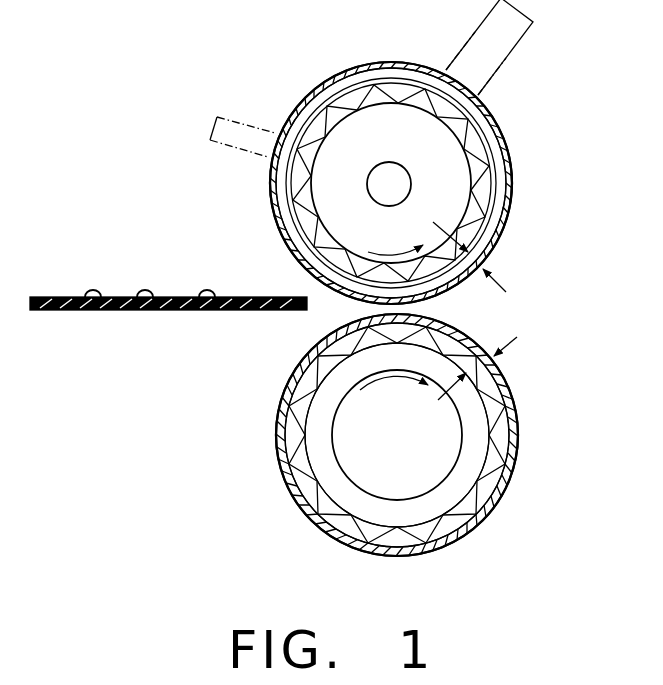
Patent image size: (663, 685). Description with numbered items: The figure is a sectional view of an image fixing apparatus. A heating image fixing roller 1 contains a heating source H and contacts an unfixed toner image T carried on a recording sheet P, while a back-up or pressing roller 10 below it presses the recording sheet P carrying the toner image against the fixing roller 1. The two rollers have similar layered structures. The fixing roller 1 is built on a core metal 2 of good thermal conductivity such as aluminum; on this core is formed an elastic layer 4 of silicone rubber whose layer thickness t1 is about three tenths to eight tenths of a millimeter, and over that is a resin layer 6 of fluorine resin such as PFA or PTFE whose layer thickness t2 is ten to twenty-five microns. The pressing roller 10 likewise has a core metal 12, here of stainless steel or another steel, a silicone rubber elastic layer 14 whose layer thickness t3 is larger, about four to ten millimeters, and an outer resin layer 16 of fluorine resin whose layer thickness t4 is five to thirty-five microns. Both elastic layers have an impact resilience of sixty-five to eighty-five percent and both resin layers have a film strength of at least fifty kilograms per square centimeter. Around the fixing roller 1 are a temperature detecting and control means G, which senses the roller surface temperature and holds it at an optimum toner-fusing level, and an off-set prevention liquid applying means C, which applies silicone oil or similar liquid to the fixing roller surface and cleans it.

The heating image fixing roller 1 is at (504, 118).
The core metal 2 is at (492, 201).
The elastic layer 4 is at (502, 172).
The resin layer 6 is at (509, 151).
The pressing roller 10 is at (516, 471).
The core metal 12 is at (462, 524).
The elastic layer 14 is at (481, 514).
The resin layer 16 is at (518, 433).
The layer thickness t1 is at (483, 253).
The layer thickness t2 is at (497, 290).
The layer thickness t3 is at (487, 336).
The layer thickness t4 is at (503, 369).
The off-set prevention liquid applying means C is at (510, 47).
The temperature detecting and control means G is at (205, 116).
The heating source H is at (398, 168).
The recording sheet P is at (147, 311).
The unfixed toner image T is at (150, 296).